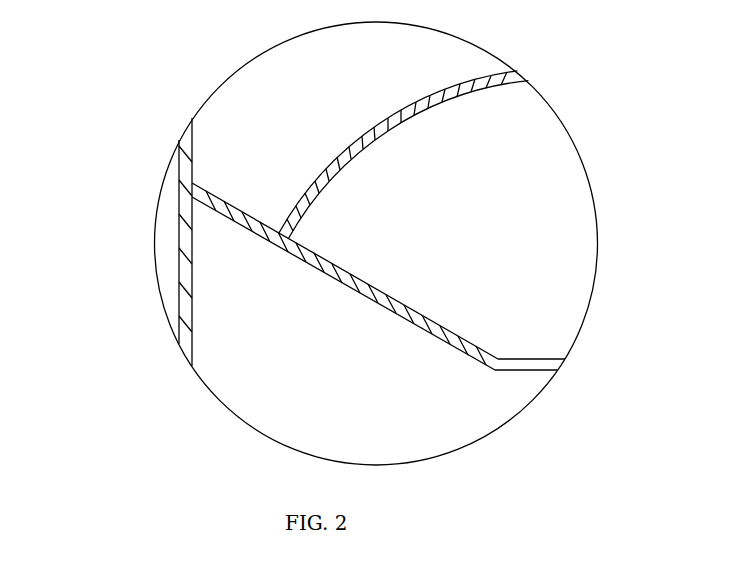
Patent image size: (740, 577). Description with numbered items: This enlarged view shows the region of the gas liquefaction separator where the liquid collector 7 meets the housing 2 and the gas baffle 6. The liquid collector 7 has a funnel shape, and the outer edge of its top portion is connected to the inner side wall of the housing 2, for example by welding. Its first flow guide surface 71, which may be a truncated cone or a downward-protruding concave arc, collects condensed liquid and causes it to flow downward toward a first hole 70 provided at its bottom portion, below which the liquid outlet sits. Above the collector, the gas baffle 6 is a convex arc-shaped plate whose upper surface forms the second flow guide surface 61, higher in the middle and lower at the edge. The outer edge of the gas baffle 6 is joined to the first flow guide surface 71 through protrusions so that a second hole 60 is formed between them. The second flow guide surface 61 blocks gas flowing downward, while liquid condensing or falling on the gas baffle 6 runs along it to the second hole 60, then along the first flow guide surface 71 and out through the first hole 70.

The housing 2 is at (179, 262).
The gas baffle 6 is at (480, 72).
The second hole 60 is at (292, 200).
The second flow guide surface 61 is at (393, 117).
The liquid collector 7 is at (382, 292).
The first hole 70 is at (528, 362).
The first flow guide surface 71 is at (447, 328).